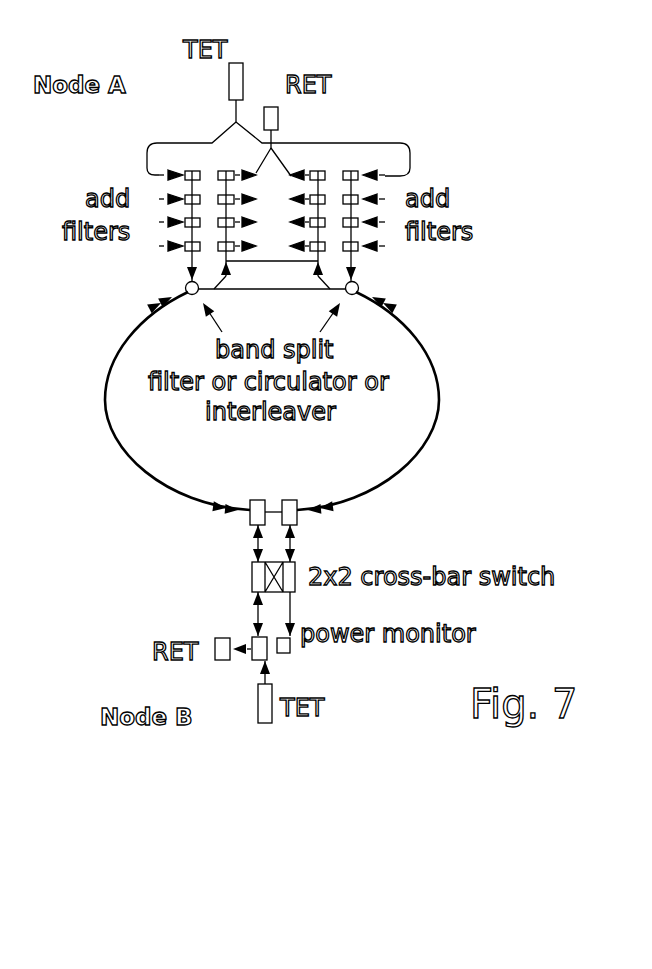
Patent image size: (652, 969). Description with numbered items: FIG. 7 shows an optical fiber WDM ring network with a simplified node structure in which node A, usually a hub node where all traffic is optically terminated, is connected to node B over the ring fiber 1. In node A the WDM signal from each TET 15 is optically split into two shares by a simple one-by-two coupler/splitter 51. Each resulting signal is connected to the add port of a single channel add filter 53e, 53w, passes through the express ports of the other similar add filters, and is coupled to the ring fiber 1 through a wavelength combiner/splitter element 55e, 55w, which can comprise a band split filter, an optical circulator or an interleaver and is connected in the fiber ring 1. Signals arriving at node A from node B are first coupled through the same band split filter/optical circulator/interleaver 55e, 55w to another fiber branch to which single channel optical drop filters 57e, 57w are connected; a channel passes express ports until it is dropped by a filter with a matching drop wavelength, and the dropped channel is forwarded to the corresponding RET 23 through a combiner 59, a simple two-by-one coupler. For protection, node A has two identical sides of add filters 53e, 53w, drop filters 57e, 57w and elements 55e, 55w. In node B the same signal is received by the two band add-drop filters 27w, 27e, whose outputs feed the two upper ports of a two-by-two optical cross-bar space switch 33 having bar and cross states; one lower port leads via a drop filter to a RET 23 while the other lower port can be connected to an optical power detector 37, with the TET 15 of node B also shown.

The ring fiber 1 is at (418, 336).
The TET 15 is at (230, 84).
The RET 23 is at (271, 107).
The band add-drop filter 27w is at (258, 500).
The band add-drop filter 27e is at (290, 500).
The 2×2 optical cross-bar space switch 33 is at (250, 578).
The optical power detector 37 is at (291, 654).
The 1×2 coupler/splitter 51 is at (234, 121).
The single channel add filter 53e is at (192, 171).
The single channel add filter 53w is at (351, 171).
The wavelength combiner/splitter element 55e is at (192, 295).
The wavelength combiner/splitter element 55w is at (352, 295).
The single channel optical drop filter 57e is at (218, 176).
The single channel optical drop filter 57w is at (318, 171).
The combiner 59 is at (282, 148).